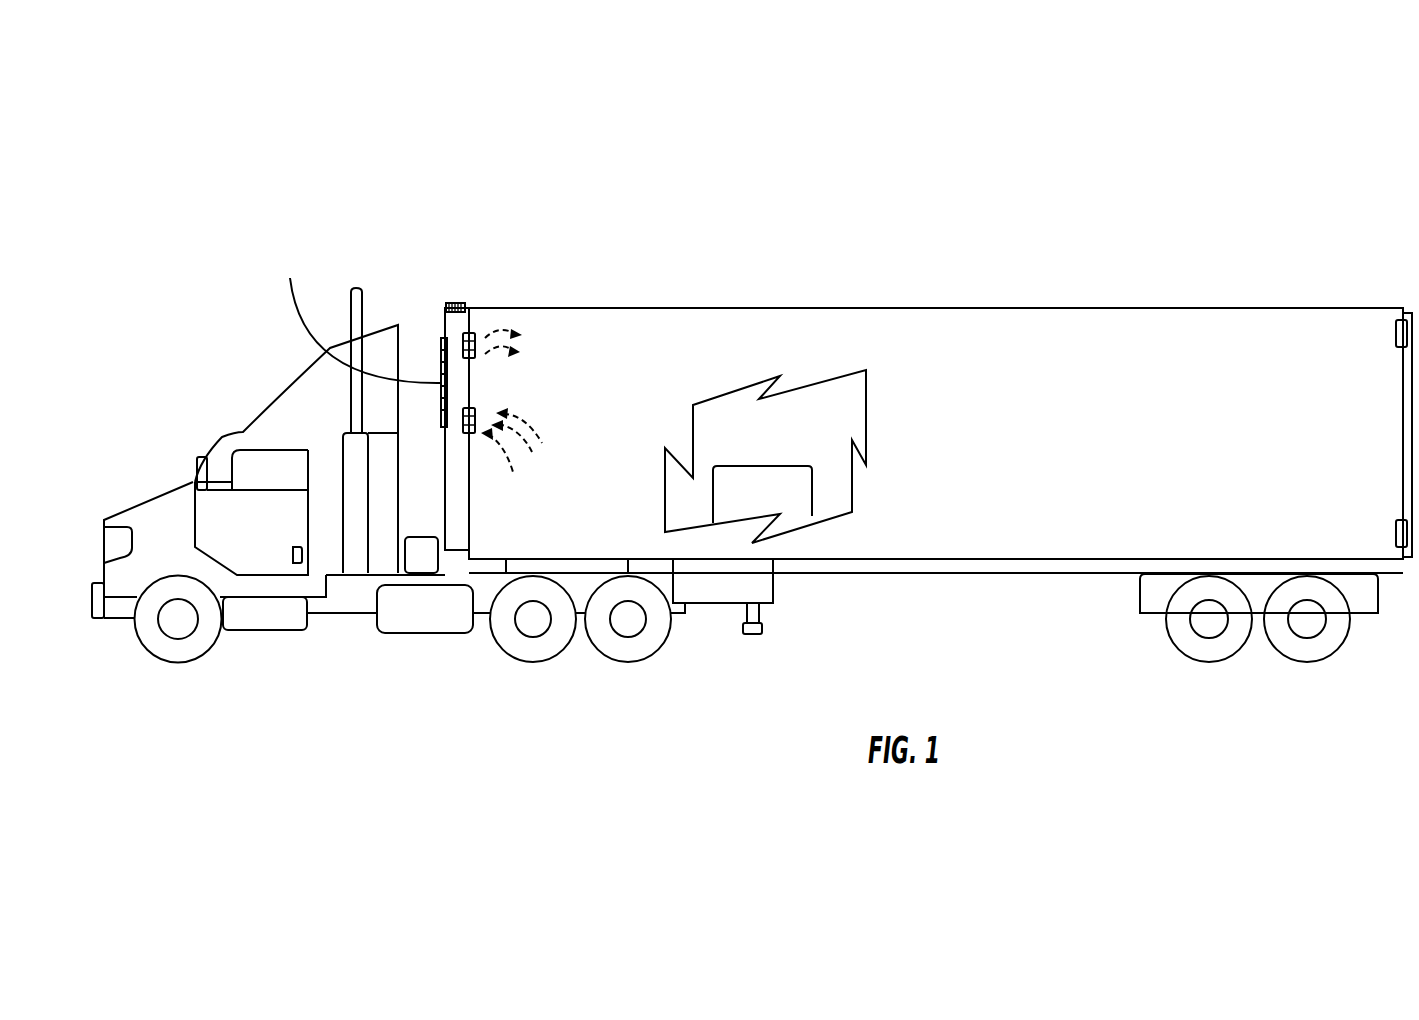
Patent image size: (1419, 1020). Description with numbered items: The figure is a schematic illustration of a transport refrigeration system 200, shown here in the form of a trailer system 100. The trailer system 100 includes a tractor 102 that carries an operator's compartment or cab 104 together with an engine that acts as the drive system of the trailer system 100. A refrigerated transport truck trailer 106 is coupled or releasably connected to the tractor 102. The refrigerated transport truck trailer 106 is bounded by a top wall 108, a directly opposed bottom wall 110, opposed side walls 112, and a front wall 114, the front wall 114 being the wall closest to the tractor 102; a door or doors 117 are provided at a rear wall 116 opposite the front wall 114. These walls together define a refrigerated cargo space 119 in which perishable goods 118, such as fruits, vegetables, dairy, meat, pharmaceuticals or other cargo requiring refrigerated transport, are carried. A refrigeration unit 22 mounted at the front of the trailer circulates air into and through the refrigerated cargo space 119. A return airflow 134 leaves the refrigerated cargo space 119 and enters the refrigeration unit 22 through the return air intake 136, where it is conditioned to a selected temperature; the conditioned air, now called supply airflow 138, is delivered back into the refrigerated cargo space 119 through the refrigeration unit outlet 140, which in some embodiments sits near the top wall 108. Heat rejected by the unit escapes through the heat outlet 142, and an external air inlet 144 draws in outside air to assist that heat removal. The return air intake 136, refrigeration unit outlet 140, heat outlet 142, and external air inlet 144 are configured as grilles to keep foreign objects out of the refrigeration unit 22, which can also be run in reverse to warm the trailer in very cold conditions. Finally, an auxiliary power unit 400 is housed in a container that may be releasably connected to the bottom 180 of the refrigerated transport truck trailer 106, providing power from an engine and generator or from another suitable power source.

The trailer system 100 is at (360, 192).
The tractor 102 is at (112, 623).
The cab 104 is at (233, 468).
The refrigerated transport truck trailer 106 is at (1190, 318).
The top wall 108 is at (660, 308).
The bottom wall 110 is at (992, 558).
The side walls 112 is at (793, 448).
The front wall 114 is at (471, 453).
The rear wall 116 is at (1403, 377).
The doors 117 is at (1403, 452).
The perishable goods 118 is at (713, 494).
The refrigerated cargo space 119 is at (845, 412).
The return airflow 134 is at (533, 447).
The return air intake 136 is at (472, 408).
The supply airflow 138 is at (520, 352).
The refrigeration unit outlet 140 is at (468, 330).
The heat outlet 142 is at (458, 291).
The external air inlet 144 is at (357, 315).
The bottom of the refrigerated transport truck trailer 180 is at (1078, 567).
The transport refrigeration system 200 is at (462, 247).
The refrigeration unit 22 is at (440, 327).
The auxiliary power unit 400 is at (765, 593).